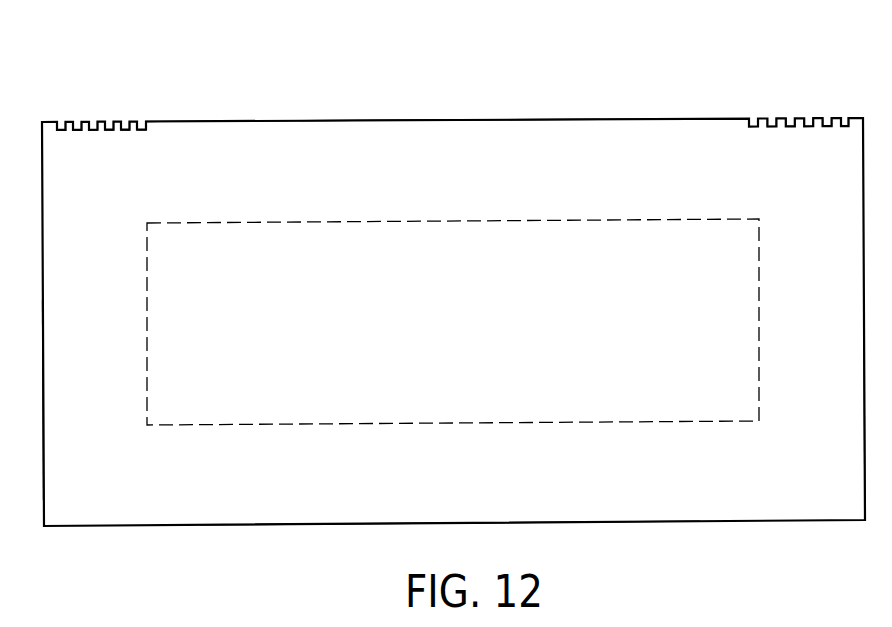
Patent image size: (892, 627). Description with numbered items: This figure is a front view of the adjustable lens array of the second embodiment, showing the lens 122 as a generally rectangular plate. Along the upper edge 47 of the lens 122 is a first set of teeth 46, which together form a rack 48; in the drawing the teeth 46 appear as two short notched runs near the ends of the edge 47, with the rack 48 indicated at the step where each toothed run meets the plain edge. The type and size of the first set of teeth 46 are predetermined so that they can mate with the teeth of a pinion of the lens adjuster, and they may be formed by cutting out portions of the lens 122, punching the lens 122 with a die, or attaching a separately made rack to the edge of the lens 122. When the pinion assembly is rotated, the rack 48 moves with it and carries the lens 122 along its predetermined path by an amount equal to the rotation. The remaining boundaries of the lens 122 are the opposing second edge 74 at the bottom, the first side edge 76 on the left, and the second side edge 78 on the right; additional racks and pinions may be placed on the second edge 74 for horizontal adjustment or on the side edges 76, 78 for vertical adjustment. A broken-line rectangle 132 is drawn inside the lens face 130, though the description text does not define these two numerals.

The lens 122 is at (556, 84).
The window or display opening region 132 is at (236, 306).
The panel face 130 is at (334, 158).
The edge 47 is at (415, 121).
The first set of teeth 46 is at (127, 121).
The rack 48 is at (153, 120).
The second edge 74 is at (407, 525).
The first side edge 76 is at (43, 482).
The second side edge 78 is at (865, 477).